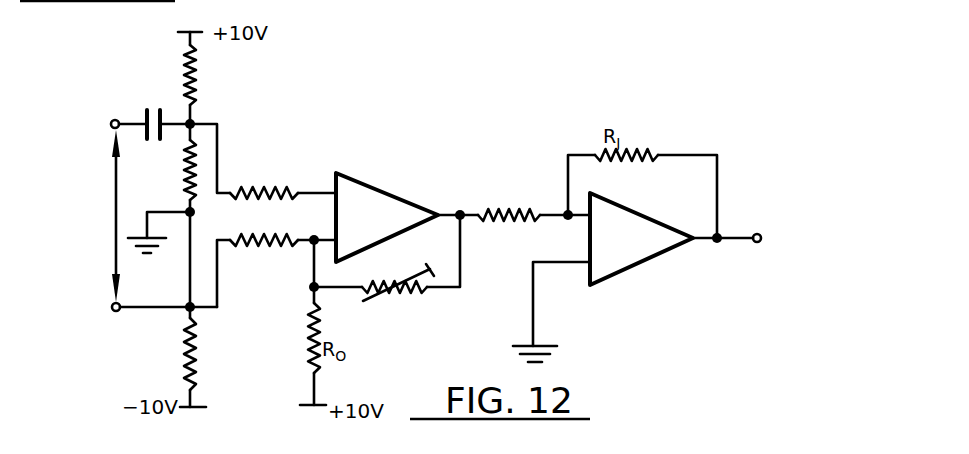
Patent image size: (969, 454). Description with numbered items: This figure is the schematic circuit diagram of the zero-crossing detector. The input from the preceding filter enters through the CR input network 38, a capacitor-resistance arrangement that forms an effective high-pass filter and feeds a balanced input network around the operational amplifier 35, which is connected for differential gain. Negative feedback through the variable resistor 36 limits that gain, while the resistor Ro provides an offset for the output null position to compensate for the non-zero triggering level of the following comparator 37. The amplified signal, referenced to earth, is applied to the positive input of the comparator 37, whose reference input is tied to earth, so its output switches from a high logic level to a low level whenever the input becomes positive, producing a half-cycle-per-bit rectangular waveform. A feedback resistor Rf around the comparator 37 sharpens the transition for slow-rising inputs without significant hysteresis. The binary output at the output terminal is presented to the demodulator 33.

The demodulator 33 is at (761, 239).
The operational amplifier 35 is at (350, 193).
The feedback resistor 36 is at (392, 292).
The comparator 37 is at (598, 268).
The CR input network 38 is at (150, 328).